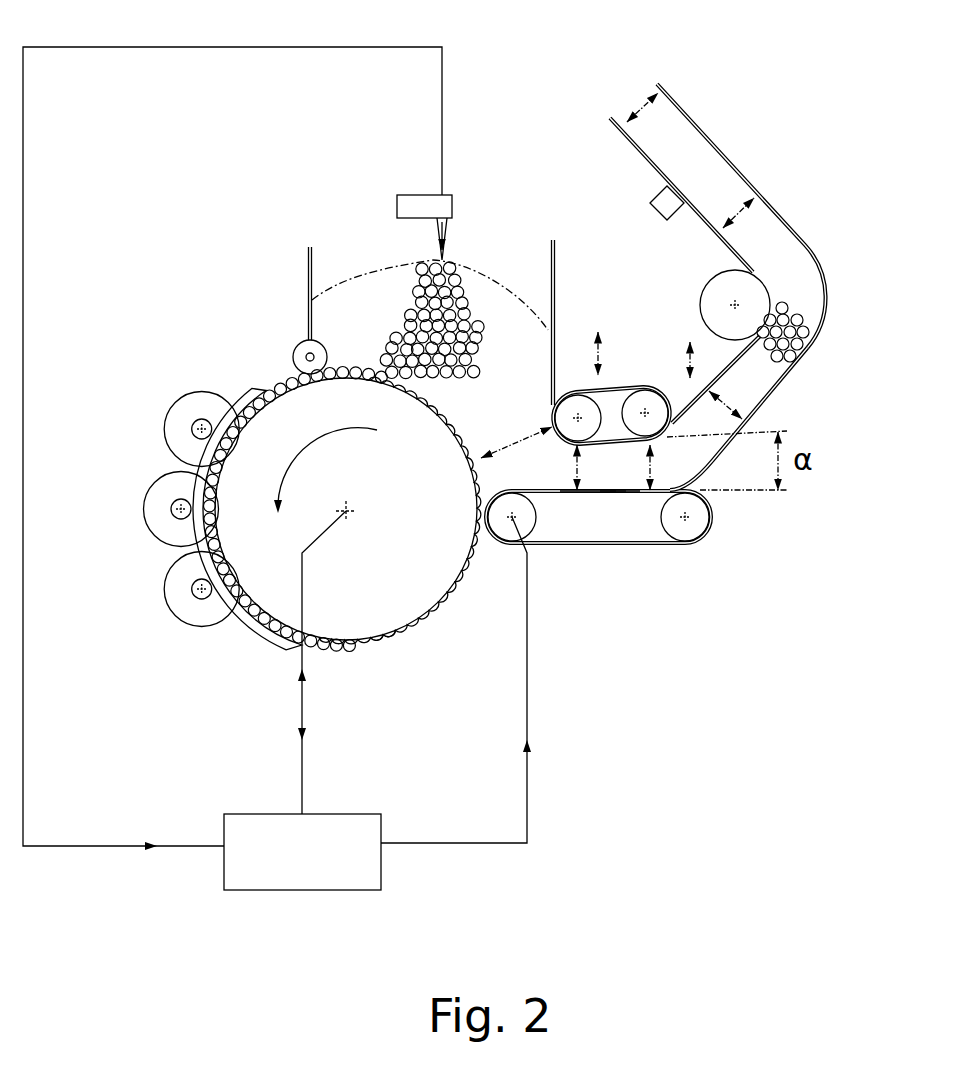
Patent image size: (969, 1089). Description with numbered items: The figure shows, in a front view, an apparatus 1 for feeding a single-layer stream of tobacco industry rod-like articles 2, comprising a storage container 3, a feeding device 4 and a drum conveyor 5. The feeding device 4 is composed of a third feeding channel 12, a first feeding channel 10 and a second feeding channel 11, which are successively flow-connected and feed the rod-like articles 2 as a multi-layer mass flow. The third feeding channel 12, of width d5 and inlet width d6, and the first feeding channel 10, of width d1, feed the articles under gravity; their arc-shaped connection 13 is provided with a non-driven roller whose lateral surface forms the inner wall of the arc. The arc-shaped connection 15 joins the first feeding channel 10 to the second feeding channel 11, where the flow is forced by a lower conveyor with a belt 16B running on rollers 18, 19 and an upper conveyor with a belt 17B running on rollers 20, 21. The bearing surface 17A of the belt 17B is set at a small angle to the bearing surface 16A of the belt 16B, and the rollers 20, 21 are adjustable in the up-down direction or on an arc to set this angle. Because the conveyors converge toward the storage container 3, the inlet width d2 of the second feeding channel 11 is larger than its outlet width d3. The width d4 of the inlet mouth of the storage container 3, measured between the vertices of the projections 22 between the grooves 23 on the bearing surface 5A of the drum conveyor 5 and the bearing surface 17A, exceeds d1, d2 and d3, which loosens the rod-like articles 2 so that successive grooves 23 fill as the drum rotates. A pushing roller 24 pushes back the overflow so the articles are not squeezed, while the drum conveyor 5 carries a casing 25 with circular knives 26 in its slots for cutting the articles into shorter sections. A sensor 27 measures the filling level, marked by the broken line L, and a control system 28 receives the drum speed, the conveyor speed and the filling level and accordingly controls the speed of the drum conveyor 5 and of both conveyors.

The apparatus for feeding a single-layer stream of rod-like articles 1 is at (172, 307).
The rod-like articles 2 is at (418, 313).
The storage container 3 is at (335, 210).
The feeding device 4 is at (782, 128).
The drum conveyor 5 is at (280, 592).
The bearing surface of the drum conveyor 5A is at (425, 637).
The first feeding channel 10 is at (790, 397).
The second feeding channel 11 is at (597, 503).
The third feeding channel 12 is at (720, 138).
The connection of the first and third feeding channels 13 is at (835, 283).
The connection of the first and second feeding channels 15 is at (723, 498).
The bearing surface of the lower belt 16A is at (608, 496).
The belt of the lower conveyor 16B is at (617, 494).
The bearing surface of the upper belt 17A is at (578, 418).
The belt of the upper conveyor 17B is at (610, 437).
The roller of the lower conveyor 18 is at (513, 513).
The roller of the lower conveyor 19 is at (697, 527).
The roller of the upper conveyor 20 is at (550, 327).
The roller of the upper conveyor 21 is at (645, 413).
The projections 22 is at (395, 636).
The grooves 23 is at (378, 640).
The pushing roller 24 is at (308, 338).
The casing 25 is at (250, 397).
The circular knives 26 is at (153, 497).
The sensor 27 is at (427, 205).
The control system 28 is at (330, 866).
The filling level line L is at (467, 273).
The width of the first feeding channel d1 is at (735, 398).
The inlet width of the second feeding channel d2 is at (674, 467).
The outlet width of the second feeding channel d3 is at (601, 467).
The width of the inlet mouth of the storage container d4 is at (516, 432).
The width of the third feeding channel d5 is at (726, 201).
The width of the third feeding channel d6 is at (632, 96).